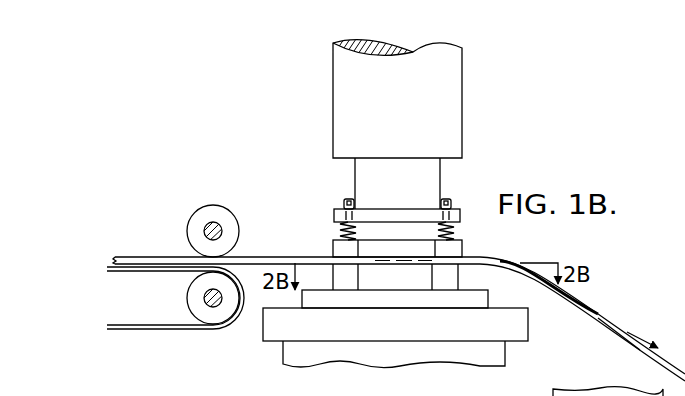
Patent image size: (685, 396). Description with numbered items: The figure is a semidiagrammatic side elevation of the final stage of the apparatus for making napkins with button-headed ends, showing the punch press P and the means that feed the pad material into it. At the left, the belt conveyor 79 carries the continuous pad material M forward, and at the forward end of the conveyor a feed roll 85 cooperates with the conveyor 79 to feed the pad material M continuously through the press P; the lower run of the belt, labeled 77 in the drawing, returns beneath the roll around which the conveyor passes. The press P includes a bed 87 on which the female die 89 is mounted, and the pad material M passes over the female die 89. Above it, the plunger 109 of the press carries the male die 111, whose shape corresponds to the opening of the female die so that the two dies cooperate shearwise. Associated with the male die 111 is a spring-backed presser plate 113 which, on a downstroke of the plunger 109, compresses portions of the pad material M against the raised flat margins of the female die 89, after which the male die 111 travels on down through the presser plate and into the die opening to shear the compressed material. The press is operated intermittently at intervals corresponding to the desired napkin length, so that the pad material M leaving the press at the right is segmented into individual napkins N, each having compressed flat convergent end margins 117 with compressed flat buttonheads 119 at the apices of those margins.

The punch press P is at (338, 86).
The pad material M is at (146, 257).
The napkin N is at (579, 305).
The feed roll 85 is at (202, 215).
The belt conveyor 79 is at (172, 331).
The conveyor belt 77 is at (160, 272).
The plunger 109 is at (428, 187).
The male die 111 is at (422, 231).
The presser plate 113 is at (340, 249).
The female die 89 is at (348, 282).
The bed 87 is at (519, 325).
The convergent end margins 117 is at (598, 313).
The buttonheads 119 is at (599, 318).